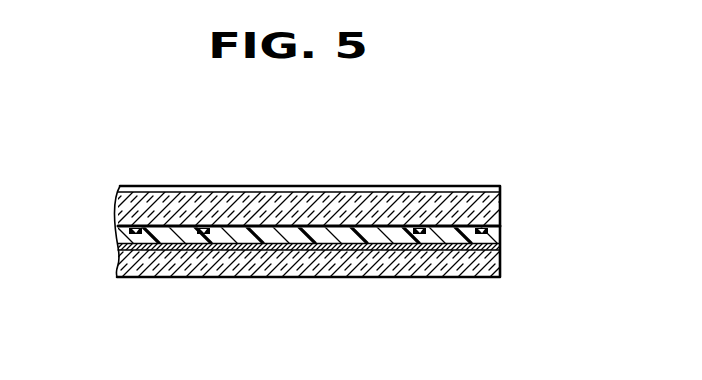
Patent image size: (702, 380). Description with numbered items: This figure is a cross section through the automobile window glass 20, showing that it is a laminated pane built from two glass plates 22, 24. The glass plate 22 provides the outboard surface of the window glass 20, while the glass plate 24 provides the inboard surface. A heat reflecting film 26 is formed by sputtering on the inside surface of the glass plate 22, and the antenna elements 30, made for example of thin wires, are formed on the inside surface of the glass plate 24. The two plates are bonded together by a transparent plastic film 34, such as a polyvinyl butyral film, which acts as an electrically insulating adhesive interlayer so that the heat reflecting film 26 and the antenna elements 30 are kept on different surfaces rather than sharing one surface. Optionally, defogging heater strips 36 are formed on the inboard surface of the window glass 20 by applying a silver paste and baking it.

The window glass 20 is at (520, 216).
The glass plate 22 is at (482, 260).
The glass plate 24 is at (502, 200).
The heat reflecting film 26 is at (502, 244).
The antenna elements 30 is at (197, 237).
The transparent plastic film 34 is at (347, 234).
The defogging heater strips 36 is at (478, 186).